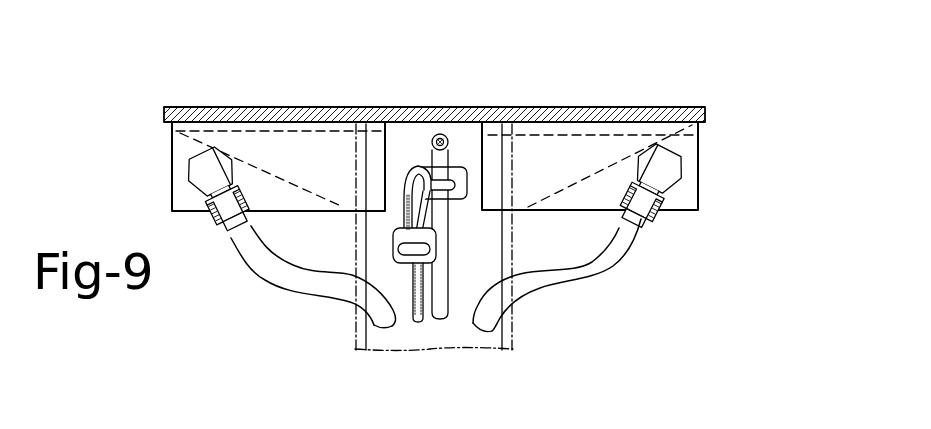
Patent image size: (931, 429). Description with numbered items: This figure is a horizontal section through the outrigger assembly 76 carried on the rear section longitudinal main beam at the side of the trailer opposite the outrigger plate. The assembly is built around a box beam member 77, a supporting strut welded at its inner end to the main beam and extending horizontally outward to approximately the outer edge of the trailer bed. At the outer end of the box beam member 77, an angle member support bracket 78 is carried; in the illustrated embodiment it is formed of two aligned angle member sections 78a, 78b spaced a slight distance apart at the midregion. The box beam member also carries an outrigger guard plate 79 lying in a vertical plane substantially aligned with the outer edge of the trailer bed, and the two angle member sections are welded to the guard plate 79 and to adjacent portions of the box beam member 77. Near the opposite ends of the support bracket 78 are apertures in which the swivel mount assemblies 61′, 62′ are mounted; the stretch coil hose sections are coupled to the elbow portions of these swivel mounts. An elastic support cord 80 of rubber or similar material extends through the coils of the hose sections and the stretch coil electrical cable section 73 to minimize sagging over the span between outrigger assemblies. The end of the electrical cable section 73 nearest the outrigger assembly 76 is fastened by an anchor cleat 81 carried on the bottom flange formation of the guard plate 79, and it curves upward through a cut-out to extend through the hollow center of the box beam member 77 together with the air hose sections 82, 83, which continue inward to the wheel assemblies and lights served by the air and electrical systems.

The outrigger assembly 76 is at (684, 73).
The box beam member 77 is at (355, 326).
The angle member support bracket 78 is at (246, 136).
The angle member section 78a is at (302, 140).
The angle member section 78b is at (590, 124).
The outrigger guard plate 79 is at (382, 108).
The elastic support cord 80 is at (395, 258).
The anchor cleat 81 is at (455, 185).
The air hose section 82 is at (272, 283).
The air hose section 83 is at (611, 255).
The stretch coil electrical cable section 73 is at (452, 260).
The swivel mount assembly 61′ is at (190, 172).
The swivel mount assembly 62′ is at (688, 157).